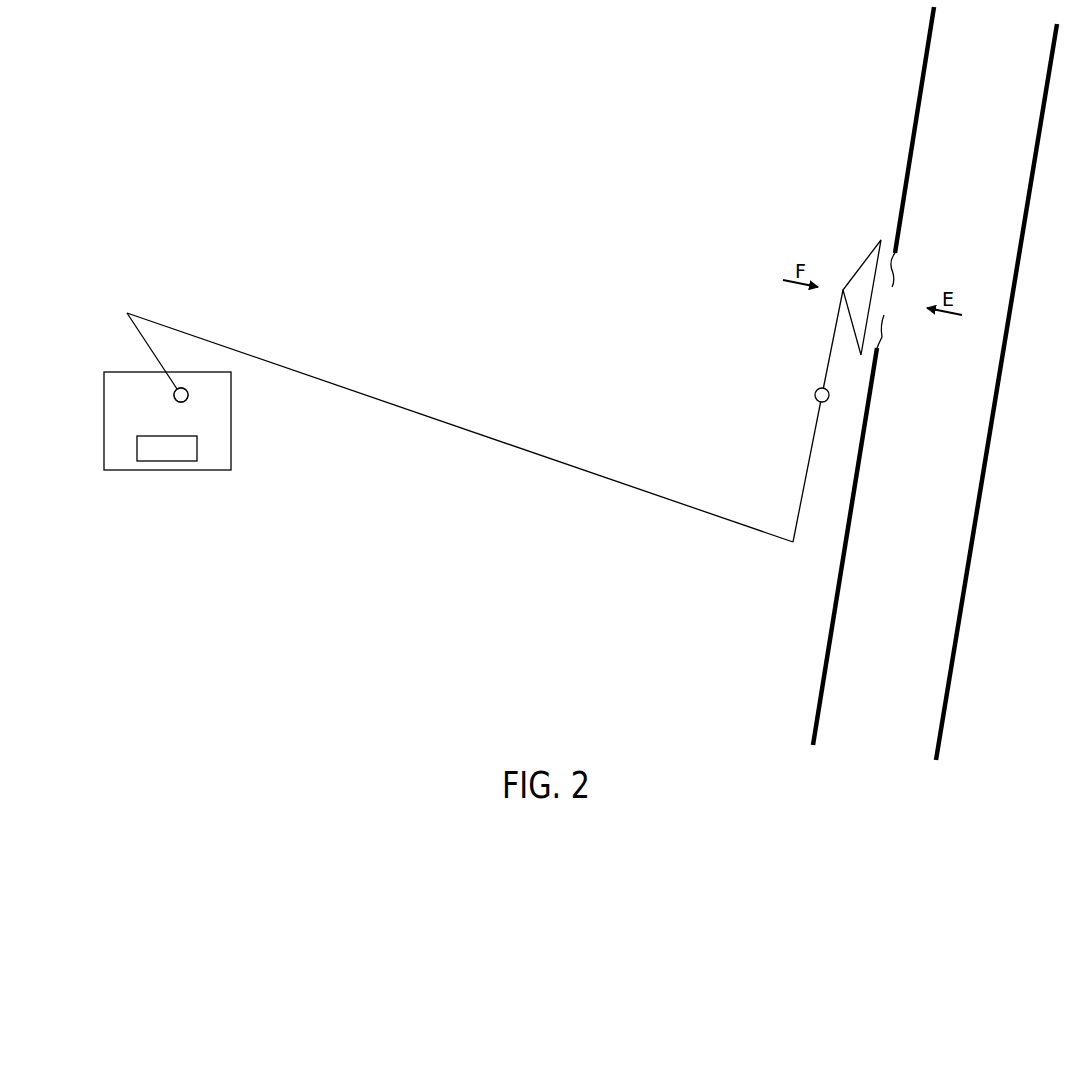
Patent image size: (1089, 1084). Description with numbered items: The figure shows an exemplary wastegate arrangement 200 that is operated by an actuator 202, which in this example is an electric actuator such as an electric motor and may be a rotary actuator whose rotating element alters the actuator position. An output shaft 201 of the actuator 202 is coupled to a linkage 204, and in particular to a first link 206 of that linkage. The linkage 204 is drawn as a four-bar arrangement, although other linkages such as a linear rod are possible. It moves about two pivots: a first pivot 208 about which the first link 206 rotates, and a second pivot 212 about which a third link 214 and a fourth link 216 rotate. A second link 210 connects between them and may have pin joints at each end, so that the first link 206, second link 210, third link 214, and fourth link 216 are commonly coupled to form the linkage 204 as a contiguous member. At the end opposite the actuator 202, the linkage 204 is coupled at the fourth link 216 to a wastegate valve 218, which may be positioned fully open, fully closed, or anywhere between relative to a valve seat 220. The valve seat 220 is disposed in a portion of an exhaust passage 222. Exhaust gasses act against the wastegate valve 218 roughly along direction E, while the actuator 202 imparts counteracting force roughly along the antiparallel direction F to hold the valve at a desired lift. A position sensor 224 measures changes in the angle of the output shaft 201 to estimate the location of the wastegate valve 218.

The wastegate arrangement 200 is at (483, 200).
The output shaft 201 is at (174, 396).
The actuator 202 is at (104, 372).
The linkage 204 is at (436, 478).
The first link 206 is at (127, 313).
The first pivot 208 is at (186, 401).
The second link 210 is at (267, 362).
The second pivot 212 is at (829, 396).
The third link 214 is at (803, 489).
The fourth link 216 is at (829, 367).
The wastegate valve 218 is at (860, 270).
The valve seat 220 is at (873, 376).
The exhaust passage 222 is at (930, 602).
The position sensor 224 is at (167, 448).